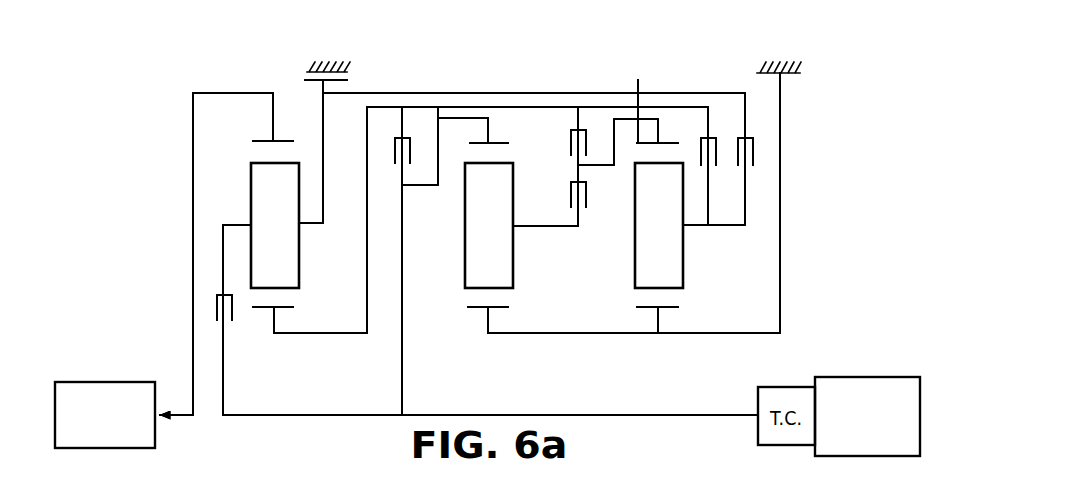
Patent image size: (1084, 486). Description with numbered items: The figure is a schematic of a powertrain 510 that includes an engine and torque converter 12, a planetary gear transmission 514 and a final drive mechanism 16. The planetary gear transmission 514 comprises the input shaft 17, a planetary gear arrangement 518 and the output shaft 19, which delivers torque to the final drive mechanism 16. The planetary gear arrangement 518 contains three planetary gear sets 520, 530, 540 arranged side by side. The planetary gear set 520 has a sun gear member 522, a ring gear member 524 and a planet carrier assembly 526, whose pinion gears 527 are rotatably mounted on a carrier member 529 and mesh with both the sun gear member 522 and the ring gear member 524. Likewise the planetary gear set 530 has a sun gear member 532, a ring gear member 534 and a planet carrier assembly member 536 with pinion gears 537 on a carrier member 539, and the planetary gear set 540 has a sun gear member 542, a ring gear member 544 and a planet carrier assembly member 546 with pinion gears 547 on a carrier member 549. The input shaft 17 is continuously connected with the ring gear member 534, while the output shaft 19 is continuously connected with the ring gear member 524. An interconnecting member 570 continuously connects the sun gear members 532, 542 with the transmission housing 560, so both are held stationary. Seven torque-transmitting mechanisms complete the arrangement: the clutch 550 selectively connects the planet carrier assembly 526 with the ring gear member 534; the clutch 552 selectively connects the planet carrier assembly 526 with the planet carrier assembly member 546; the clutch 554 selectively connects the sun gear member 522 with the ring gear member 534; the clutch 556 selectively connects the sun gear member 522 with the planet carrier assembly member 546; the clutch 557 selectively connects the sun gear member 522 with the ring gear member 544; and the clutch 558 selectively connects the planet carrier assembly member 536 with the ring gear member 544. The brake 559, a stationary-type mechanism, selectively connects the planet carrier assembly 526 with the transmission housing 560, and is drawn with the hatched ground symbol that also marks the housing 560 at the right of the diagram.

The engine and torque converter 12 is at (850, 360).
The final drive mechanism 16 is at (120, 371).
The input shaft 17 is at (732, 418).
The output shaft 19 is at (185, 418).
The powertrain 510 is at (170, 173).
The planetary gear transmission 514 is at (433, 86).
The planetary gear arrangement 518 is at (576, 86).
The planetary gear set 520 is at (262, 311).
The sun gear member 522 is at (284, 309).
The ring gear member 524 is at (263, 140).
The planet carrier assembly 526 is at (306, 236).
The pinion gears 527 is at (261, 214).
The carrier member 529 is at (313, 225).
The planetary gear set 530 is at (477, 312).
The sun gear member 532 is at (498, 310).
The ring gear member 534 is at (482, 141).
The planet carrier assembly member 536 is at (520, 235).
The pinion gears 537 is at (475, 214).
The carrier member 539 is at (532, 227).
The planetary gear set 540 is at (652, 312).
The sun gear member 542 is at (672, 310).
The ring gear member 544 is at (650, 141).
The planet carrier assembly member 546 is at (690, 237).
The pinion gears 547 is at (645, 214).
The carrier member 549 is at (697, 228).
The clutch 550 is at (206, 303).
The clutch 552 is at (735, 136).
The clutch 554 is at (392, 136).
The clutch 556 is at (698, 136).
The clutch 557 is at (566, 133).
The clutch 558 is at (586, 211).
The brake 559 is at (300, 72).
The transmission housing 560 is at (307, 62).
The interconnecting member 570 is at (565, 335).